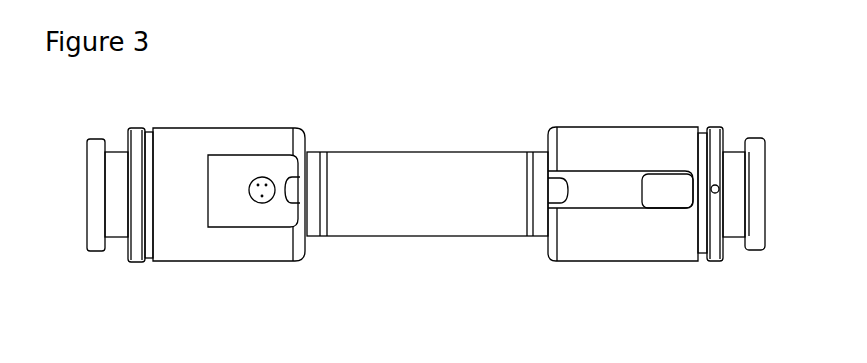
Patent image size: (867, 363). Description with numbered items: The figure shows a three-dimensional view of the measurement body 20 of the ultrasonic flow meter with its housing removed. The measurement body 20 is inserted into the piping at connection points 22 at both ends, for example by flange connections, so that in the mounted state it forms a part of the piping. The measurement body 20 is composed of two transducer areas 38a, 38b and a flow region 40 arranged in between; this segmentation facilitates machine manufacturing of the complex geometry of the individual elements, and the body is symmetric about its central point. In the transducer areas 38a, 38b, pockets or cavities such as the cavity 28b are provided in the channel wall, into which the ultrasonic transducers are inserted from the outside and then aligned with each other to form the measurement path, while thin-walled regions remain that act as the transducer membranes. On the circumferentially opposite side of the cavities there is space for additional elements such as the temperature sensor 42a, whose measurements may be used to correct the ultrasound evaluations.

The measurement body 20 is at (637, 52).
The connection points 22 is at (95, 180).
The transducer area 38a is at (212, 140).
The transducer area 38b is at (593, 153).
The flow region 40 is at (408, 182).
The temperature sensor 42a is at (258, 199).
The cavity 28b is at (672, 200).